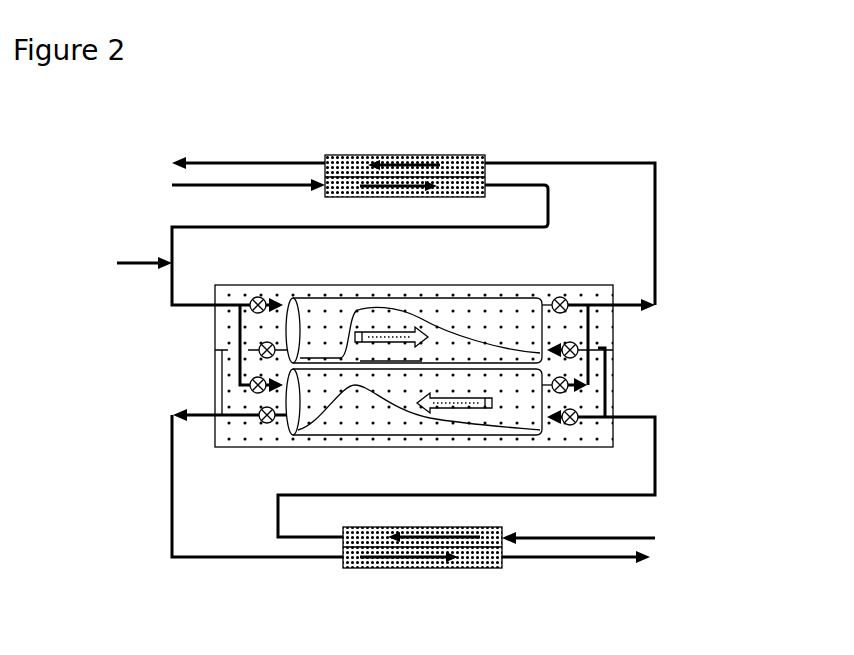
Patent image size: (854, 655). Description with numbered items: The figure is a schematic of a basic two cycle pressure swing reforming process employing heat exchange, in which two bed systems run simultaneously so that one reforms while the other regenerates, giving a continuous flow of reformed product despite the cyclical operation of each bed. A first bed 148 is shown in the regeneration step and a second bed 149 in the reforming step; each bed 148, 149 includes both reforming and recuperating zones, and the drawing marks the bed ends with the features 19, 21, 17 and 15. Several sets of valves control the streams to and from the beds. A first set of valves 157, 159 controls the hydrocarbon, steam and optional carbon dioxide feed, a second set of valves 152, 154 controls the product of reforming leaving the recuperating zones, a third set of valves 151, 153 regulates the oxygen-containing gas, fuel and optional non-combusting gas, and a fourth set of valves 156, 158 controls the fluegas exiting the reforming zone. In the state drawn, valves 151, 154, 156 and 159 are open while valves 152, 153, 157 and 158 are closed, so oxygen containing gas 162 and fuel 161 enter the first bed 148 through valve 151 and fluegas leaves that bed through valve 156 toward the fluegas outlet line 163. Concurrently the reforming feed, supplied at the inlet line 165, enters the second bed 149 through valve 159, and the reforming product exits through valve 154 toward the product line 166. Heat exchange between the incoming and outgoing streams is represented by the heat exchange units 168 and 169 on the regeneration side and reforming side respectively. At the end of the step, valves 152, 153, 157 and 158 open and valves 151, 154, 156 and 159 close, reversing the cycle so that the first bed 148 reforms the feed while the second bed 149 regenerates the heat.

The reforming tube outlet end 15 is at (553, 417).
The reforming tube inlet end 17 is at (279, 428).
The regeneration tube inlet end 19 is at (282, 303).
The regeneration tube outlet end 21 is at (548, 305).
The first bed 148 is at (452, 312).
The second bed 149 is at (386, 415).
The valve 151 is at (215, 311).
The valve 152 is at (215, 350).
The valve 153 is at (215, 387).
The valve 154 is at (172, 415).
The valve 156 is at (655, 312).
The valve 157 is at (613, 350).
The valve 158 is at (613, 377).
The valve 159 is at (655, 417).
The fuel 161 is at (138, 262).
The oxygen containing gas 162 is at (200, 186).
The regeneration exhaust outlet 163 is at (220, 162).
The reforming feed inlet stream 165 is at (600, 538).
The reforming product outlet stream 166 is at (585, 560).
The regeneration heat exchanger 168 is at (440, 155).
The reforming heat exchanger 169 is at (385, 568).